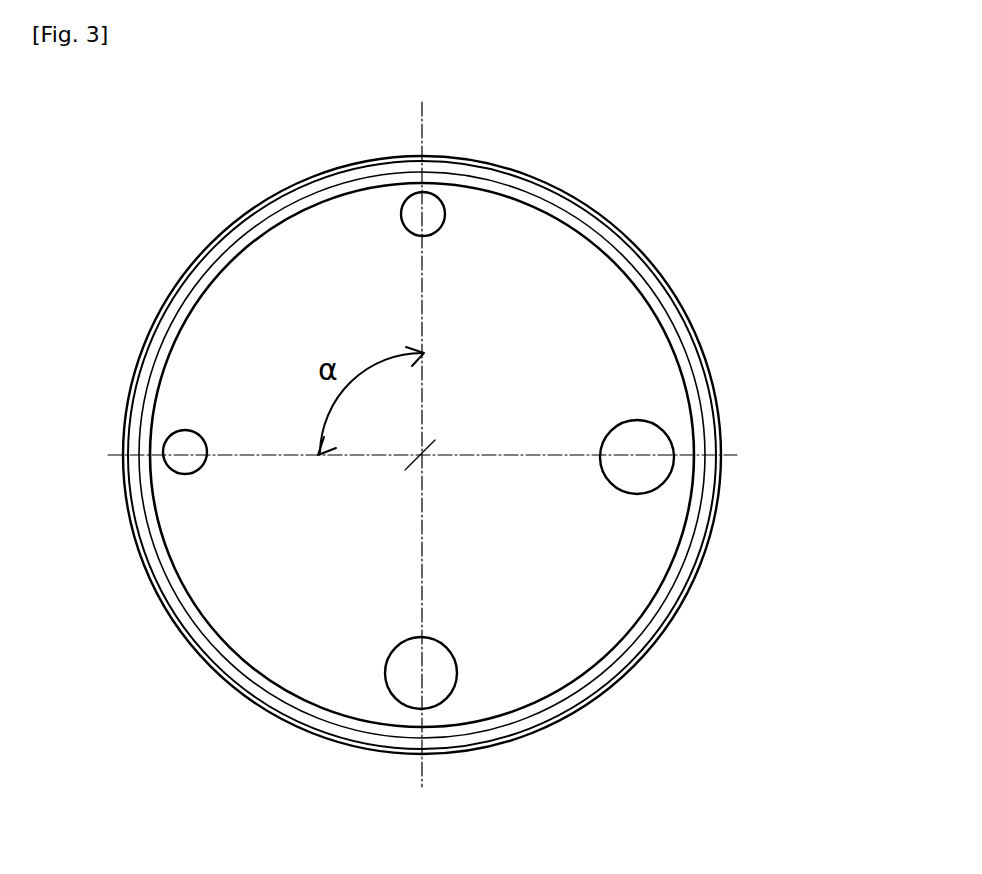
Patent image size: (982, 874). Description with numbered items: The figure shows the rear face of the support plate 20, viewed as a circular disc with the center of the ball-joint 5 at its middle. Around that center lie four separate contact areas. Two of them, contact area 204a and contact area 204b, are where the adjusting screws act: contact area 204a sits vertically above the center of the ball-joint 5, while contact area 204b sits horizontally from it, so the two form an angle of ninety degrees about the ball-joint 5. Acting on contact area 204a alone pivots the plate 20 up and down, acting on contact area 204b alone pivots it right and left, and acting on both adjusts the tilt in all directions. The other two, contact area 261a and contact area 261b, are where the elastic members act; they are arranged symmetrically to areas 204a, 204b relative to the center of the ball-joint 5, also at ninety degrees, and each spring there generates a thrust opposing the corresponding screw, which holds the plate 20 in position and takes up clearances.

The plate 20 is at (638, 240).
The contact area 204a is at (443, 198).
The contact area 204b is at (170, 442).
The contact area 261a is at (398, 698).
The contact area 261b is at (663, 473).
The ball-joint 5 is at (425, 450).